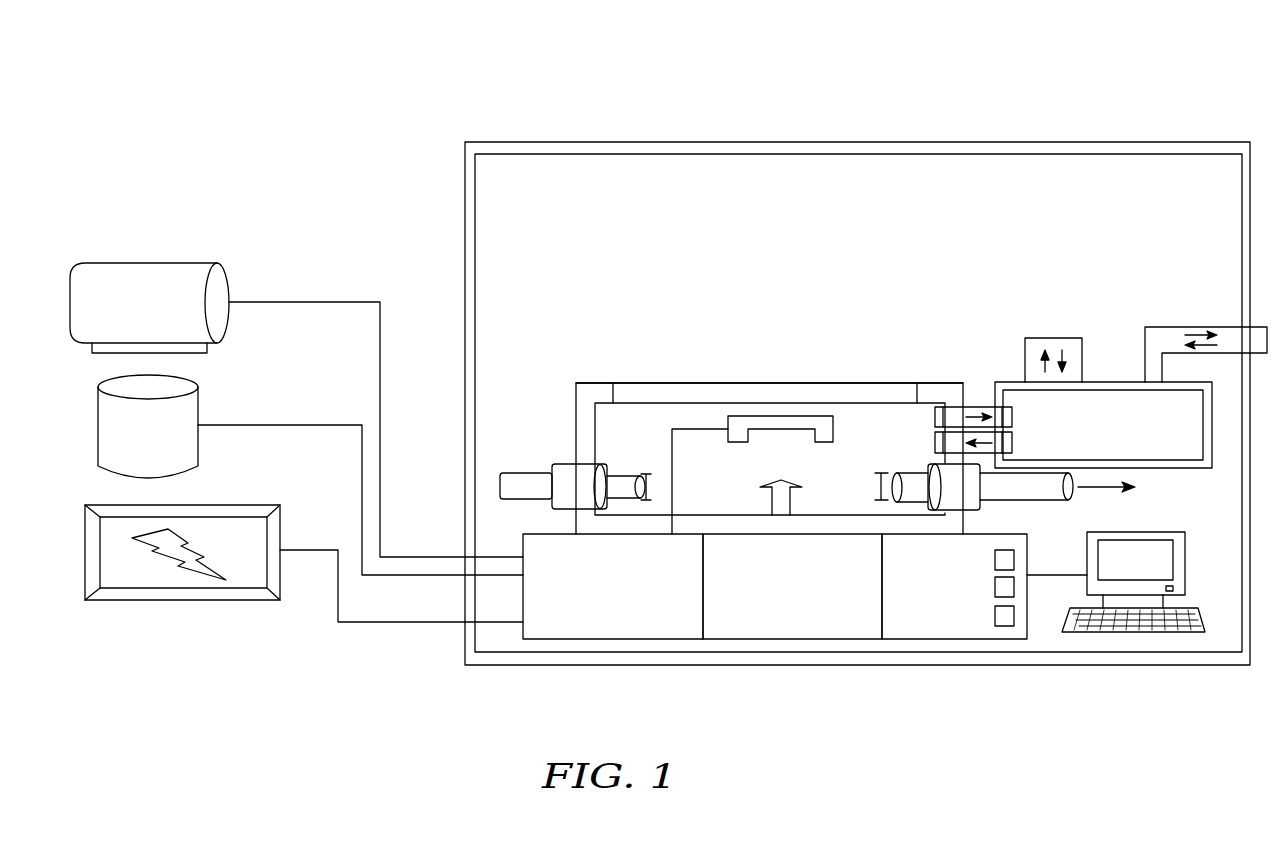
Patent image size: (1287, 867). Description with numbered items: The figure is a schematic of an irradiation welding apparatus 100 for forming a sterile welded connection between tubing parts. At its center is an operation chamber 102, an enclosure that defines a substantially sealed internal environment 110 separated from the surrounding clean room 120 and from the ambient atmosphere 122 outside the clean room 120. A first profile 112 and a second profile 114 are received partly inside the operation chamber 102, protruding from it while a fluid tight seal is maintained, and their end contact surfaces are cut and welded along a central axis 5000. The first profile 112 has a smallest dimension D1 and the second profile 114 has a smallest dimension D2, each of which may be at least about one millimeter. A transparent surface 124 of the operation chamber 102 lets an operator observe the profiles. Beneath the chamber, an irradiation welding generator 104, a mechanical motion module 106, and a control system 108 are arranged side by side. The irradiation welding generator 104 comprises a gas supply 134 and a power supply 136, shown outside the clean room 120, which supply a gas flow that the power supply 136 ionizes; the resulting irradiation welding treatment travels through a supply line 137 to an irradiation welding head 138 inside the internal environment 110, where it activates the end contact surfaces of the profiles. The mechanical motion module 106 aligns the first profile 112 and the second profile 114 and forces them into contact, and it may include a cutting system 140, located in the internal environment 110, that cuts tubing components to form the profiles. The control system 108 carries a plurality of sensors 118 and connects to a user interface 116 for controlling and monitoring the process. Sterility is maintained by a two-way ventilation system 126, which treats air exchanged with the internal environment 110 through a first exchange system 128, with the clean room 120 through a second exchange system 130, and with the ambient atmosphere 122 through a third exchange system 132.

The irradiation welding apparatus 100 is at (1113, 72).
The operation chamber 102 is at (932, 381).
The irradiation welding generator 104 is at (631, 600).
The mechanical motion module 106 is at (811, 600).
The control system 108 is at (973, 600).
The internal environment 110 is at (648, 422).
The first profile 112 is at (535, 472).
The second profile 114 is at (1015, 503).
The user interface 116 is at (1180, 530).
The sensors 118 is at (1015, 562).
The clean room 120 is at (595, 218).
The ambient atmosphere 122 is at (878, 128).
The transparent surface 124 is at (748, 382).
The ventilation system 126 is at (1121, 436).
The first exchange system 128 is at (985, 406).
The second exchange system 130 is at (1060, 338).
The third exchange system 132 is at (1185, 327).
The gas supply 134 is at (168, 315).
The power supply 136 is at (189, 602).
The supply line 137 is at (676, 474).
The irradiation welding head 138 is at (798, 416).
The cutting system 140 is at (795, 486).
The central axis 5000 is at (1093, 489).
The smallest dimension of first profile D1 is at (648, 484).
The smallest dimension of second profile D2 is at (877, 486).